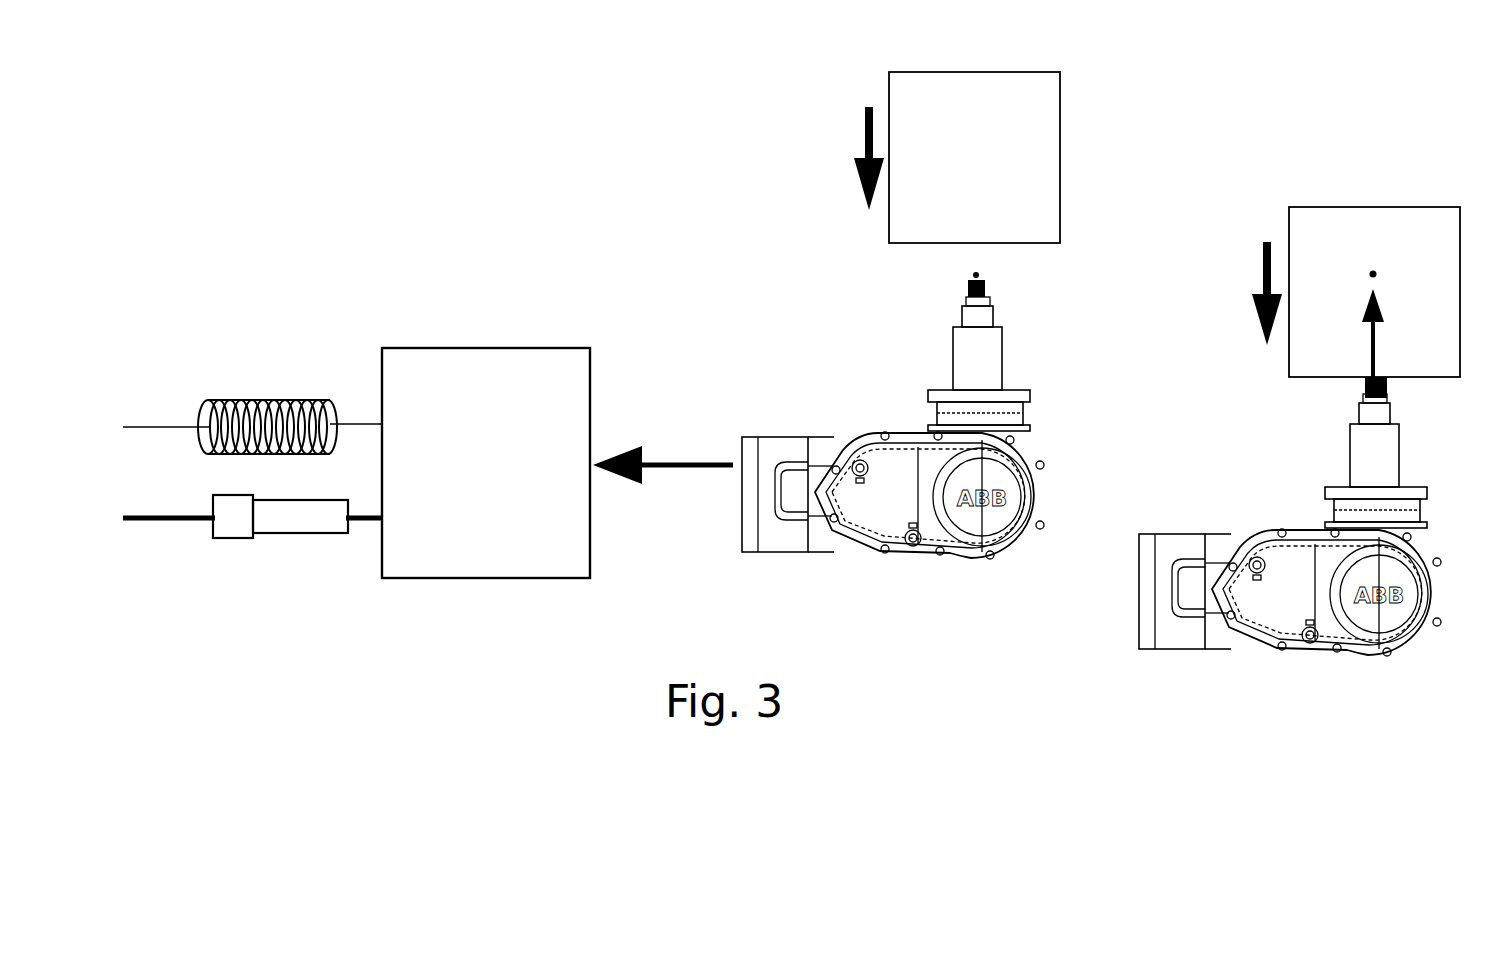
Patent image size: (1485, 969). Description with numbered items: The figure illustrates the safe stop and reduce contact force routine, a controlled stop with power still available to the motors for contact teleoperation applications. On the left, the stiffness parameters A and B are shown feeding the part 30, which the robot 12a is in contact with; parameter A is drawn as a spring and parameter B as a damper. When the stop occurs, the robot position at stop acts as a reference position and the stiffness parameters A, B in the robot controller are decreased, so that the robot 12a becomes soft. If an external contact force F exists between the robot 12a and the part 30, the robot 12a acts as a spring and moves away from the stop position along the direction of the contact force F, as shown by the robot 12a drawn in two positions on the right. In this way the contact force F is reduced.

The part 30 is at (486, 501).
The robot 12a is at (1091, 476).
The stiffness parameter A is at (252, 399).
The stiffness parameter B is at (252, 545).
The external contact force F is at (988, 409).
The contact point P is at (1192, 314).